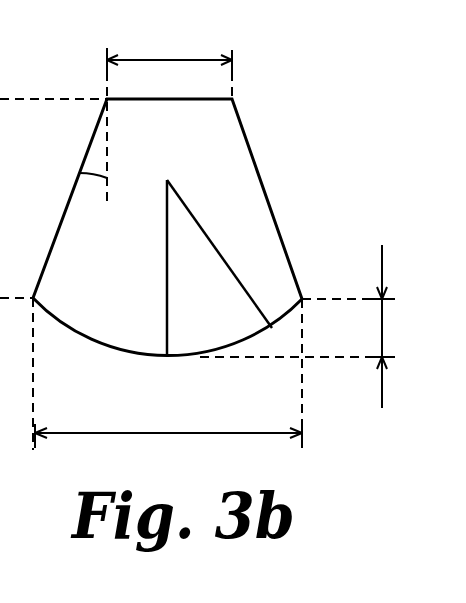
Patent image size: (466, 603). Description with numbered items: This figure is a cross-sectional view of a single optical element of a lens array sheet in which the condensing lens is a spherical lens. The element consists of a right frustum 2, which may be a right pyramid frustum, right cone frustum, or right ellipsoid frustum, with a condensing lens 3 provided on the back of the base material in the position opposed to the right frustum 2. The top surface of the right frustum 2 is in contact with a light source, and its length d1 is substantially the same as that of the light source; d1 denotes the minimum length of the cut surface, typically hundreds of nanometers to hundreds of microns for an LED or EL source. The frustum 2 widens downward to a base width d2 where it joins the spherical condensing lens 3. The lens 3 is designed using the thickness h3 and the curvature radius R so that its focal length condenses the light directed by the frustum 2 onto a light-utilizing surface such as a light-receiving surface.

The right frustum 2 is at (243, 148).
The condensing lens 3 is at (110, 340).
The length of the top surface d1 is at (169, 47).
The lower diameter d2 is at (168, 455).
The thickness h3 is at (400, 326).
The curvature radius R is at (219, 267).